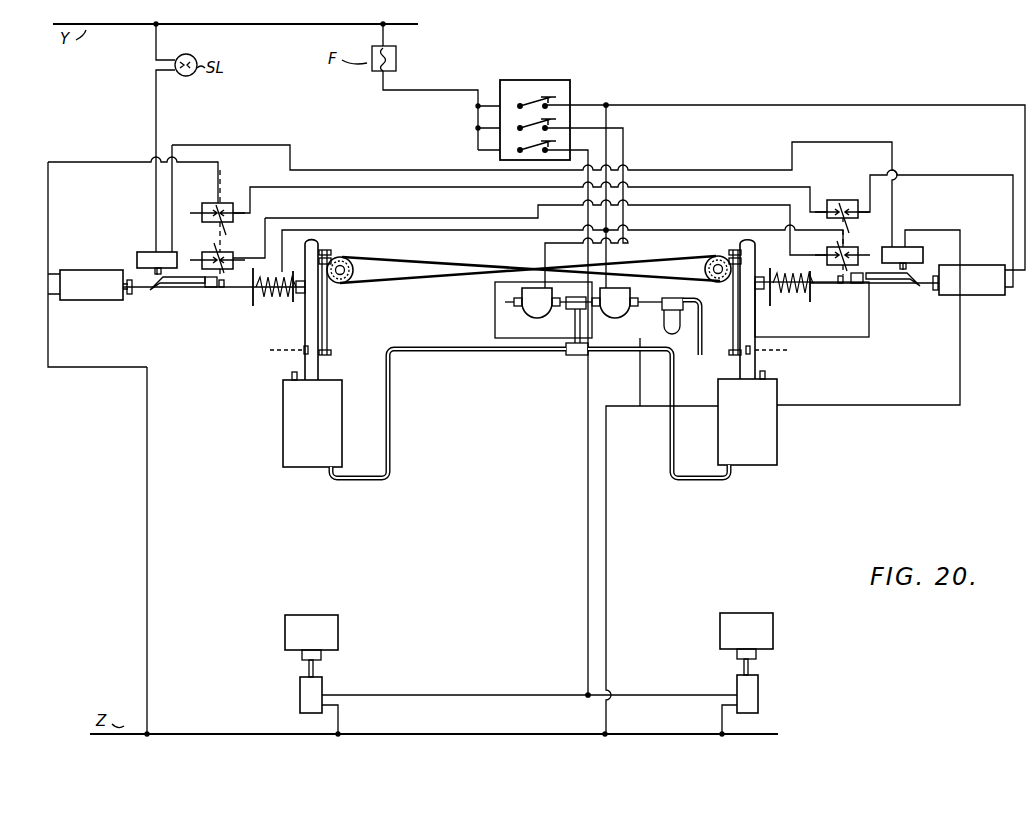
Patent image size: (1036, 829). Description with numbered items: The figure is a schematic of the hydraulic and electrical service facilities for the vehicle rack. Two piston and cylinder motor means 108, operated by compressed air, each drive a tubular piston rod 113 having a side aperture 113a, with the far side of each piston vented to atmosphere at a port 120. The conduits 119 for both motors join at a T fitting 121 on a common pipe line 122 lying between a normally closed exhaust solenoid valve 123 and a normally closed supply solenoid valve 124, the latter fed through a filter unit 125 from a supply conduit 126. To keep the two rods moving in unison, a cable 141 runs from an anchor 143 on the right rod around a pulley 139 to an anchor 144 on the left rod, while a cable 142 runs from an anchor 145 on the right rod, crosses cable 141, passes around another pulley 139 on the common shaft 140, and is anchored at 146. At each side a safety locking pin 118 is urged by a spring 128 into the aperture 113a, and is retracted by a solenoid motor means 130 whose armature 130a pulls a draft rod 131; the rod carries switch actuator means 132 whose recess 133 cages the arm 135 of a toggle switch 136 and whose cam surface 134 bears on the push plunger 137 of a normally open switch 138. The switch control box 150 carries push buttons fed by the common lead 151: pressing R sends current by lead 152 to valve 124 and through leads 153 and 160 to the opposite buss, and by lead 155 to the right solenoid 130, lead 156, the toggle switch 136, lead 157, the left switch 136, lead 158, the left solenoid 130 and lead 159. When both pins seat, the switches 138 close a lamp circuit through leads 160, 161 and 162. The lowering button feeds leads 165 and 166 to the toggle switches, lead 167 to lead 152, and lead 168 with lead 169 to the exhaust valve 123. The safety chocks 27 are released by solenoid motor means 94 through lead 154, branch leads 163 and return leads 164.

The safety chock 27 is at (318, 616).
The solenoid motor means 94 is at (300, 694).
The piston and cylinder motor means 108 is at (276, 433).
The piston rod 113 is at (320, 372).
The side aperture 113a is at (524, 350).
The safety locking pin 118 is at (302, 296).
The conduit 119 is at (356, 483).
The port 120 is at (291, 378).
The T fitting 121 is at (572, 358).
The common pipe line 122 is at (568, 330).
The exhaust solenoid actuated valve 123 is at (528, 303).
The supply solenoid actuated valve 124 is at (615, 303).
The filter unit 125 is at (680, 290).
The supply conduit 126 is at (702, 334).
The spring 128 is at (263, 298).
The solenoid motor means 130 is at (526, 282).
The armature 130a is at (128, 270).
The draft rod 131 is at (137, 294).
The switch actuator means 132 is at (200, 292).
The recess 133 is at (225, 292).
The cam surface 134 is at (150, 296).
The arm 135 is at (212, 230).
The toggle switch 136 is at (204, 206).
The push plunger 137 is at (183, 290).
The on-off switch 138 is at (530, 260).
The pulley 139 is at (347, 261).
The shaft 140 is at (341, 282).
The cable 141 is at (384, 260).
The cable 142 is at (394, 292).
The cable anchor 143 is at (728, 252).
The cable anchor 144 is at (330, 352).
The cable anchor 145 is at (732, 358).
The cable anchor 146 is at (319, 260).
The switch control box 150 is at (570, 88).
The common lead 151 is at (457, 92).
The lead 152 is at (616, 113).
The lead 153 is at (642, 267).
The lead 154 is at (592, 162).
The lead 155 is at (762, 104).
The lead 156 is at (1014, 204).
The lead 157 is at (354, 190).
The lead 158 is at (134, 162).
The lead 159 is at (148, 428).
The lead 160 is at (610, 406).
The lead 161 is at (361, 174).
The lead 162 is at (156, 226).
The branch lead 163 is at (510, 694).
The lead 164 is at (340, 722).
The lead 165 is at (628, 168).
The lead 166 is at (776, 205).
The lead 167 is at (488, 234).
The lead 168 is at (548, 247).
The lead 169 is at (495, 326).